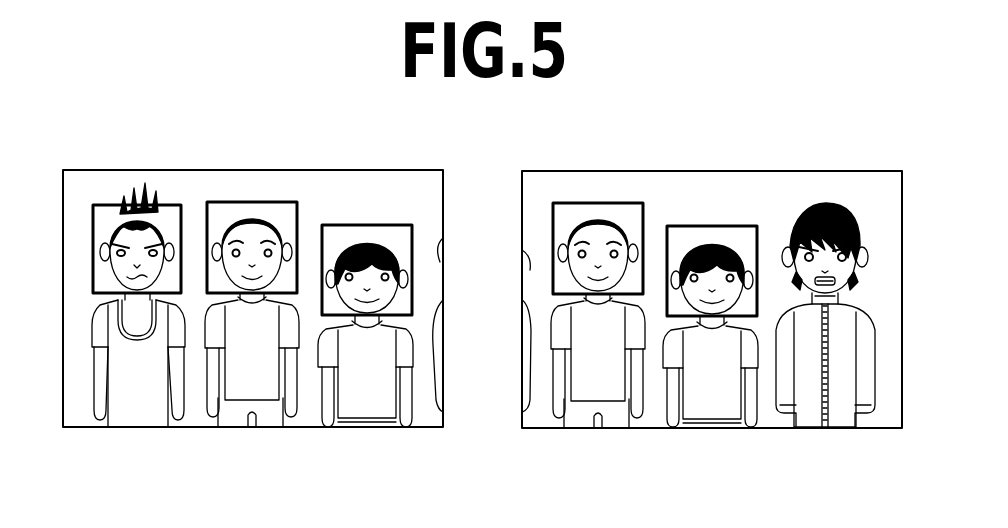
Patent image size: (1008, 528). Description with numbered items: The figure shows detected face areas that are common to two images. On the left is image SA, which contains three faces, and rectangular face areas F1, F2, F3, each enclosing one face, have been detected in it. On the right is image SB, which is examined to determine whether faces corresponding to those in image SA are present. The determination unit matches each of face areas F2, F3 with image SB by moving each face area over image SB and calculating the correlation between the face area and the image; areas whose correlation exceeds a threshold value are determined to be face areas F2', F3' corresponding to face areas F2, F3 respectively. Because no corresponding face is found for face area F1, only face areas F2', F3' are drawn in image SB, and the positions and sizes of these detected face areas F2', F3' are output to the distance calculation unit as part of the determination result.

The face area F1 is at (113, 205).
The face area F2 is at (252, 273).
The face area F3 is at (365, 273).
The image SA is at (403, 170).
The image SB is at (863, 171).
The face area F2' is at (598, 273).
The face area F3' is at (710, 273).